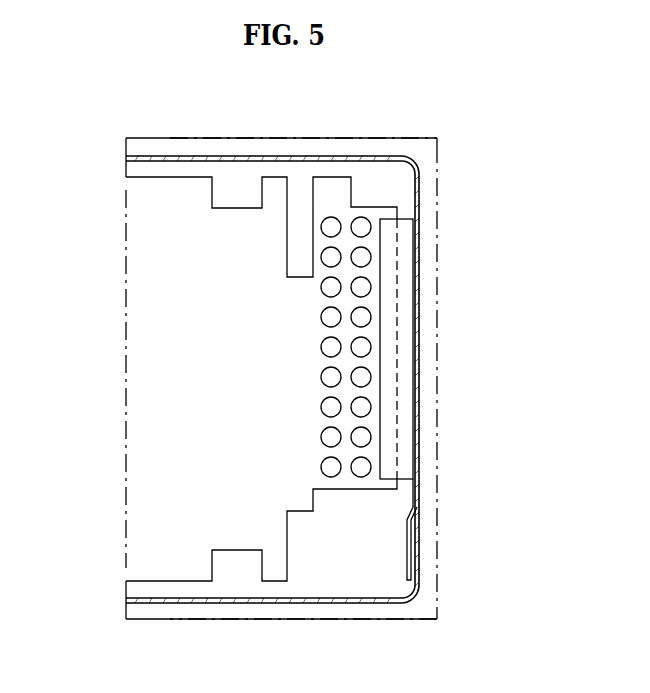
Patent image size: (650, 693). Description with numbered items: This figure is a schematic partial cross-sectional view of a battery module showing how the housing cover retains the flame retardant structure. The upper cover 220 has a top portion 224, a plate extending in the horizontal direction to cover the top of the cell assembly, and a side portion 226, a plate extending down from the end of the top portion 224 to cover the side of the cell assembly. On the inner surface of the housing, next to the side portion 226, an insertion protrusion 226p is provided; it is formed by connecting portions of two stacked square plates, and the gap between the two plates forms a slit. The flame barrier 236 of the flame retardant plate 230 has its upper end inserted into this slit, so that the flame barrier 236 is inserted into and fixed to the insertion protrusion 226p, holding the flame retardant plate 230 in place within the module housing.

The upper cover 220 is at (370, 138).
The top portion 224 is at (270, 156).
The side portion 226 is at (418, 344).
The insertion protrusion 226p is at (403, 265).
The flame retardant plate 230 is at (110, 338).
The flame barrier 236 is at (370, 393).